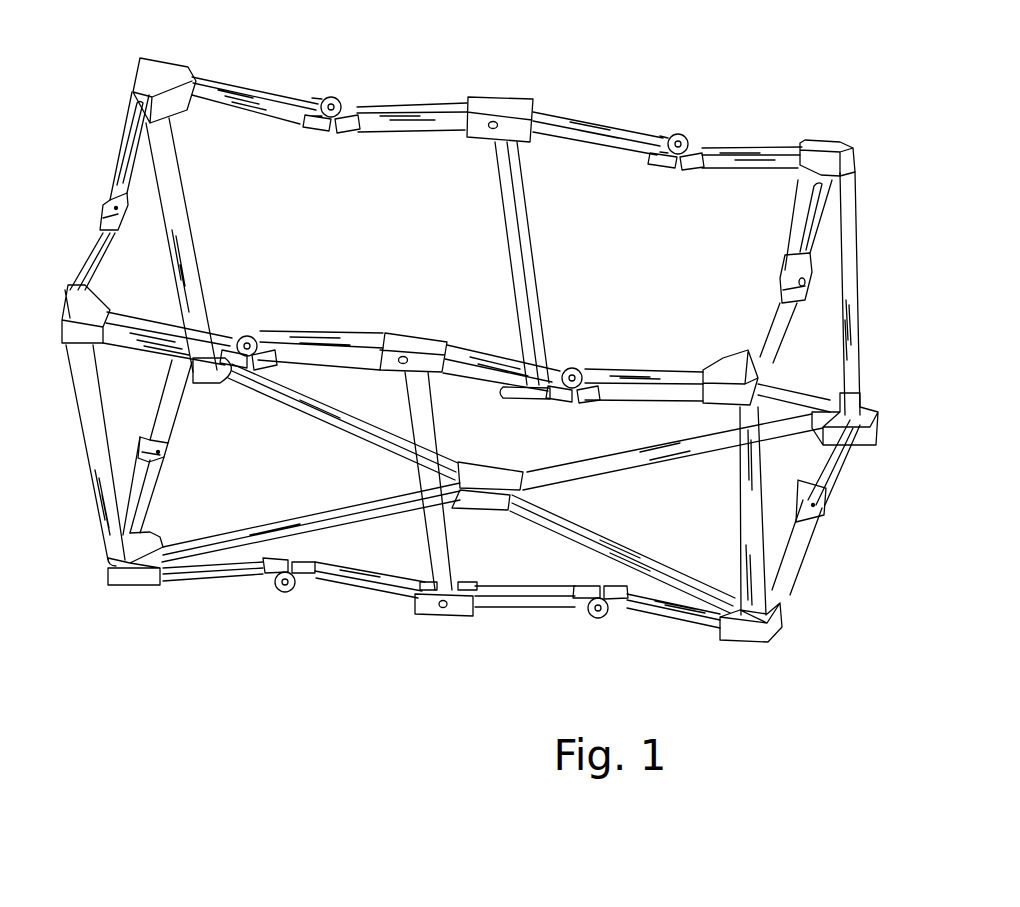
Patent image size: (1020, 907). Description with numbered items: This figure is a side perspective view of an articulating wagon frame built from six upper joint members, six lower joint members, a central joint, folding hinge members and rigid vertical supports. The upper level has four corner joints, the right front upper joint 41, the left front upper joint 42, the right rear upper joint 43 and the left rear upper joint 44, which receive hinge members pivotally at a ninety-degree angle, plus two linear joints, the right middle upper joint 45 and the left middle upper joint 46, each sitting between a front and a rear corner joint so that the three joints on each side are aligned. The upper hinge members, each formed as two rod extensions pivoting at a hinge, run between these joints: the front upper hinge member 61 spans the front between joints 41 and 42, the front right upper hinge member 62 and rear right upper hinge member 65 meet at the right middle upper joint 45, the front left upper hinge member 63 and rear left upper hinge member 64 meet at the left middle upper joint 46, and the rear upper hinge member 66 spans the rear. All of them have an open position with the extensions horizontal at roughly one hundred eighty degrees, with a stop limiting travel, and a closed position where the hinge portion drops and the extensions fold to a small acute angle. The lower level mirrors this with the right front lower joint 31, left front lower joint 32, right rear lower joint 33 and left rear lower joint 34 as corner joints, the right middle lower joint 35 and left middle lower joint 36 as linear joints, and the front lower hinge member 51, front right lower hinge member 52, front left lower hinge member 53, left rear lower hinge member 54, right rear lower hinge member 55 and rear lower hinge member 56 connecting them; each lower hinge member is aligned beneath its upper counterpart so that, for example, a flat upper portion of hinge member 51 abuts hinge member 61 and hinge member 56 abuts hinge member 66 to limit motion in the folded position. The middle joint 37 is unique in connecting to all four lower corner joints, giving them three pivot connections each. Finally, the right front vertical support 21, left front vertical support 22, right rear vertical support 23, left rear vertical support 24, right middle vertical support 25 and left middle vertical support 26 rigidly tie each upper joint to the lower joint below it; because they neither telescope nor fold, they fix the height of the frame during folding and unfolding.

The right front vertical support 21 is at (860, 298).
The left front vertical support 22 is at (745, 512).
The right rear vertical support 23 is at (180, 200).
The left rear vertical support 24 is at (97, 448).
The right middle vertical support 25 is at (528, 236).
The left middle vertical support 26 is at (441, 556).
The right front lower joint 31 is at (875, 433).
The left front lower joint 32 is at (787, 621).
The right rear lower joint 33 is at (232, 374).
The left rear lower joint 34 is at (132, 578).
The right middle lower joint 35 is at (517, 398).
The left middle lower joint 36 is at (453, 611).
The middle joint 37 is at (487, 500).
The right front upper joint 41 is at (830, 150).
The left front upper joint 42 is at (735, 358).
The right rear upper joint 43 is at (160, 75).
The left rear upper joint 44 is at (70, 306).
The right middle upper joint 45 is at (497, 108).
The left middle upper joint 46 is at (407, 342).
The front lower hinge member 51 is at (822, 517).
The front right lower hinge member 52 is at (662, 368).
The front left lower hinge member 53 is at (608, 618).
The left rear lower hinge member 54 is at (280, 590).
The right rear lower hinge member 55 is at (335, 335).
The rear lower hinge member 56 is at (158, 444).
The front upper hinge member 61 is at (797, 272).
The front right upper hinge member 62 is at (678, 135).
The front left upper hinge member 63 is at (570, 368).
The rear left upper hinge member 64 is at (245, 340).
The rear right upper hinge member 65 is at (331, 96).
The rear upper hinge member 66 is at (108, 194).